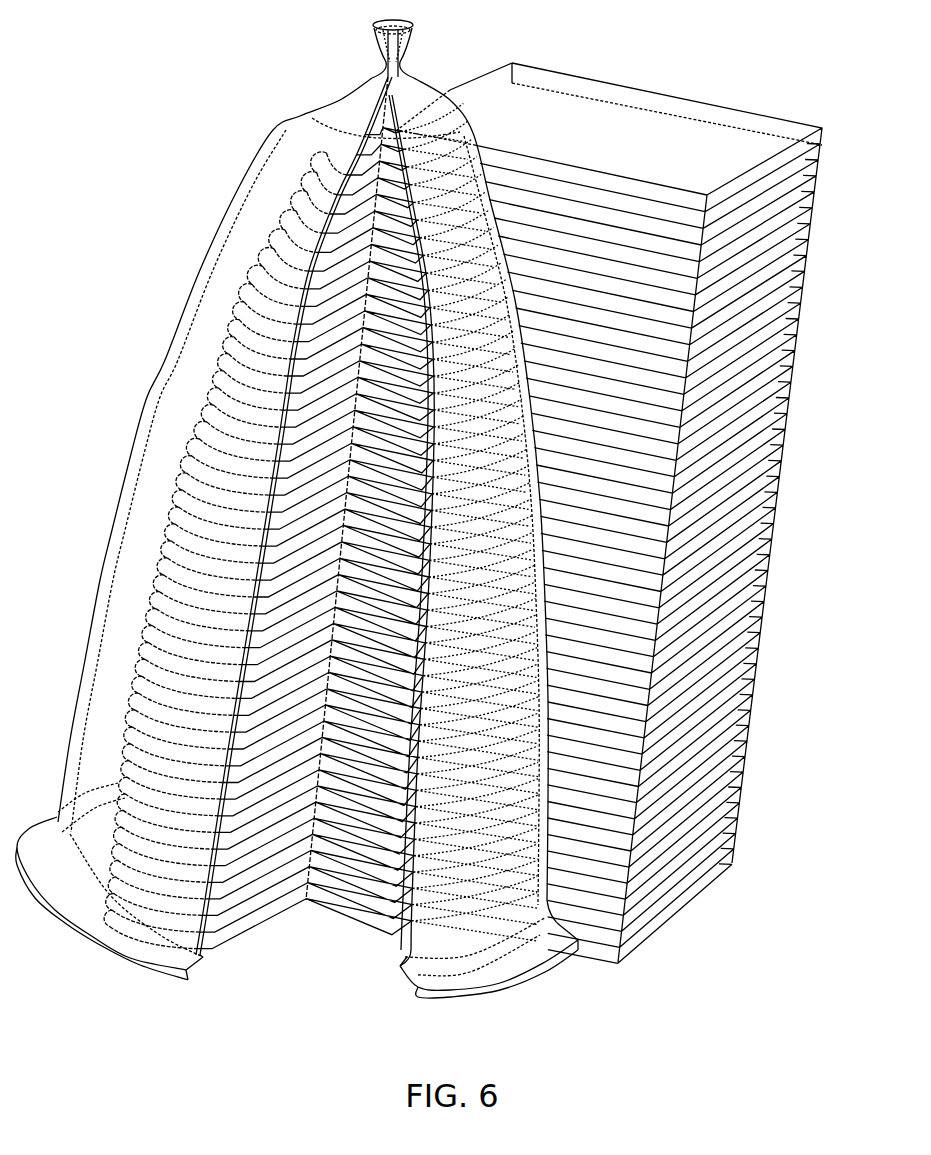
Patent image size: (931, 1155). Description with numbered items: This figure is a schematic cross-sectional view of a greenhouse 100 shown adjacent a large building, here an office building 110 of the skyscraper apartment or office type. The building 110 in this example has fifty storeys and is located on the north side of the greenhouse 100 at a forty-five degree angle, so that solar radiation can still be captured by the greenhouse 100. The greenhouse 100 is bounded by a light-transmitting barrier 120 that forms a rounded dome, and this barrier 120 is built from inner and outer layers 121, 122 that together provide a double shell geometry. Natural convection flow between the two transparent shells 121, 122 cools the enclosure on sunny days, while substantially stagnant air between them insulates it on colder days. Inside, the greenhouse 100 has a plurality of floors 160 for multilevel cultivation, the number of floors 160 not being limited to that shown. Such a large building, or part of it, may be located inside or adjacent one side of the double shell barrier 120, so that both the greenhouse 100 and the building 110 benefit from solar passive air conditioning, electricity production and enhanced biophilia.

The greenhouse 100 is at (206, 100).
The office building 110 is at (701, 82).
The light-transmitting barrier 120 is at (164, 287).
The inner layer 121 is at (350, 97).
The outer layer 122 is at (293, 127).
The floors 160 is at (347, 857).